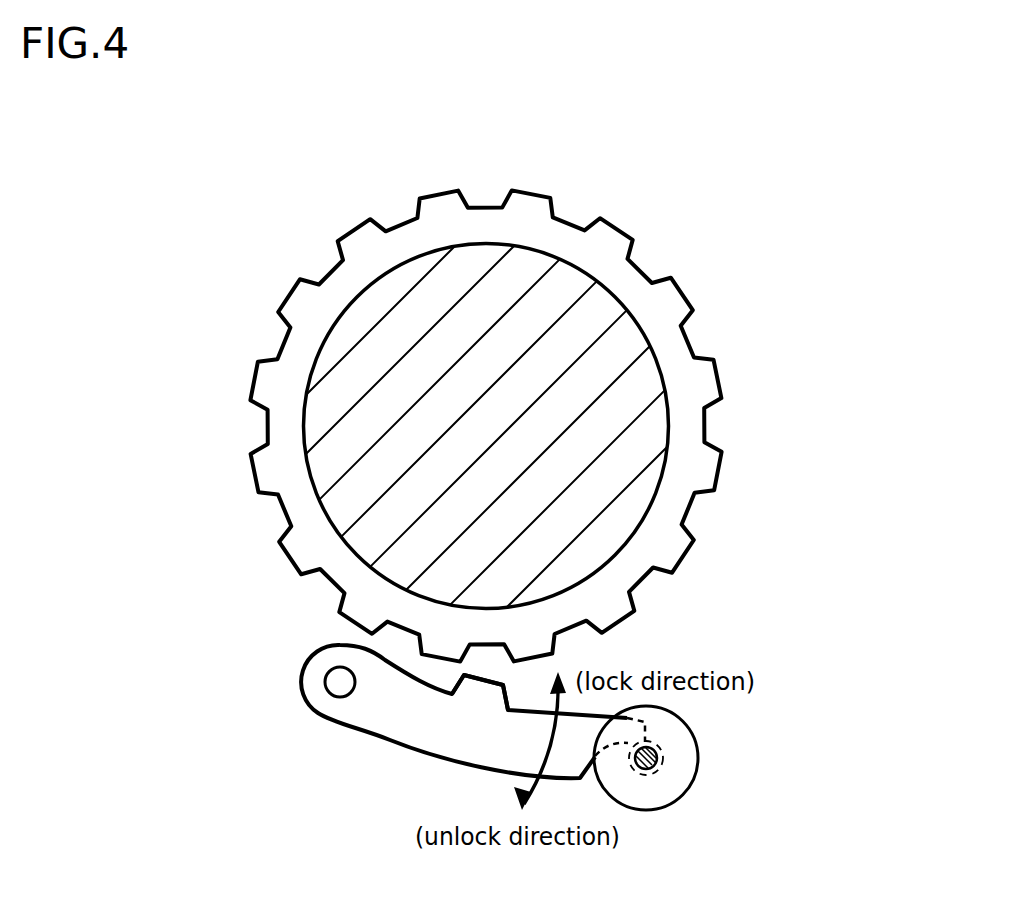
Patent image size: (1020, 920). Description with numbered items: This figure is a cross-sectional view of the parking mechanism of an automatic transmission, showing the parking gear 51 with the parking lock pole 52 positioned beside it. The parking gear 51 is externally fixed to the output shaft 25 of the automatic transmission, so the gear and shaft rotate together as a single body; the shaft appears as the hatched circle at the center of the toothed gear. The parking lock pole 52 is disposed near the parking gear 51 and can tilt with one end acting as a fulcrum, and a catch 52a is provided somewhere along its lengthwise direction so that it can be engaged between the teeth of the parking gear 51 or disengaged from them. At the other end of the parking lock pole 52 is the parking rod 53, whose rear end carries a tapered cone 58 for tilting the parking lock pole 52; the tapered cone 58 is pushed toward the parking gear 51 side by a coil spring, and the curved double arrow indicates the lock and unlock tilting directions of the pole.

The output shaft 25 is at (600, 318).
The parking gear 51 is at (722, 383).
The parking lock pole 52 is at (393, 745).
The catch 52a is at (478, 682).
The parking rod 53 is at (658, 754).
The tapered cone 58 is at (652, 793).